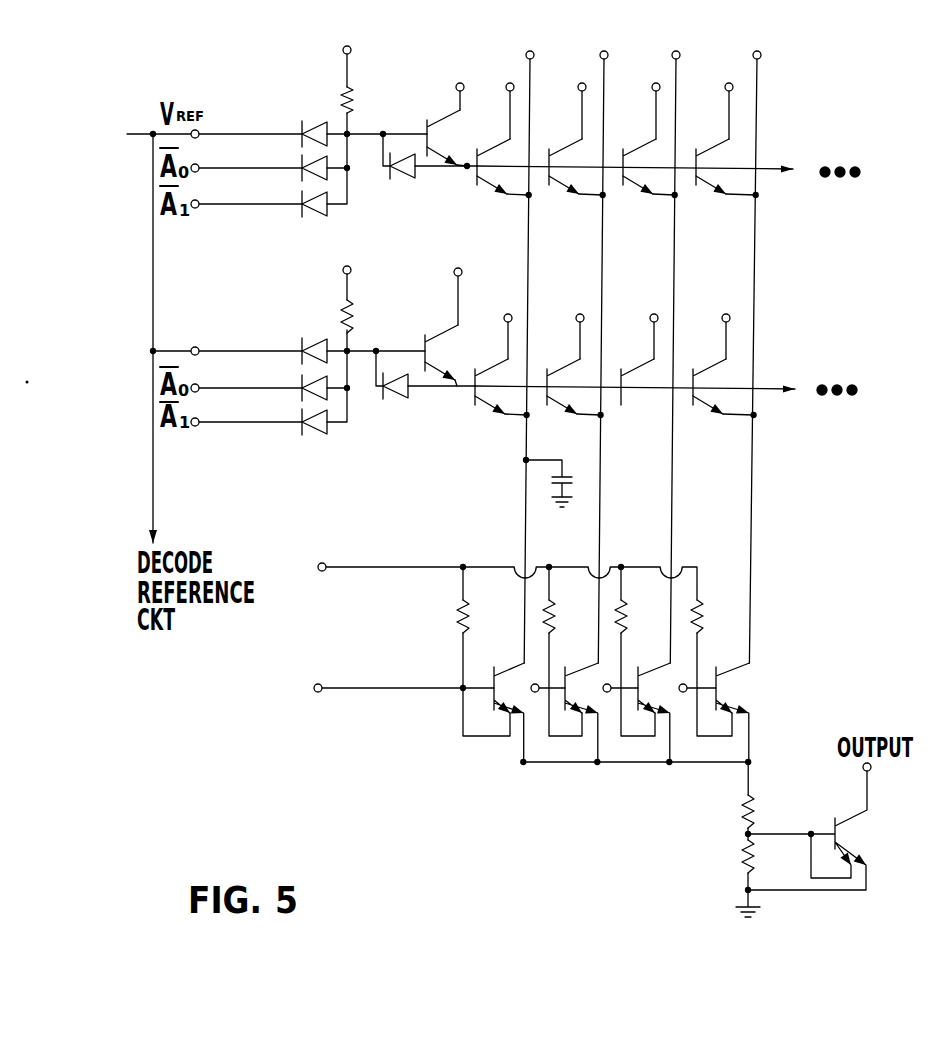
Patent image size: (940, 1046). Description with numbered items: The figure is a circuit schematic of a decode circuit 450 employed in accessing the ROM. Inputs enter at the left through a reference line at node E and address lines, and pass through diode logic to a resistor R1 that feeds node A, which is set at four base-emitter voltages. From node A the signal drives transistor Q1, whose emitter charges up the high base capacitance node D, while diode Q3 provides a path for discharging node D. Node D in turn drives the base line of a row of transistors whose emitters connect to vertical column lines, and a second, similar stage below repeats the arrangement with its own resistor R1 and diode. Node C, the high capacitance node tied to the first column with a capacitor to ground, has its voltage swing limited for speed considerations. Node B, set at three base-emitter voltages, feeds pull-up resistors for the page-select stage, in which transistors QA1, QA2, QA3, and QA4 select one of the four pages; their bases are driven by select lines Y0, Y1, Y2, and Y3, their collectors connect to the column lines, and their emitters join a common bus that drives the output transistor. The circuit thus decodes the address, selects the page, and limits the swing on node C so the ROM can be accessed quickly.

The decode circuit 450 is at (577, 273).
The resistor R1 is at (361, 198).
The transistor Q1 is at (447, 124).
The diode Q3 is at (425, 176).
The transistor QA1 is at (509, 712).
The transistor QA2 is at (583, 712).
The transistor QA3 is at (657, 712).
The transistor QA4 is at (737, 712).
The node A is at (349, 132).
The node B is at (497, 570).
The node C is at (526, 460).
The node D is at (463, 176).
The node E decode reference E is at (153, 134).
The output select line Y0 is at (394, 684).
The output select line Y1 is at (545, 671).
The output select line Y2 is at (618, 671).
The output select line Y3 is at (694, 671).